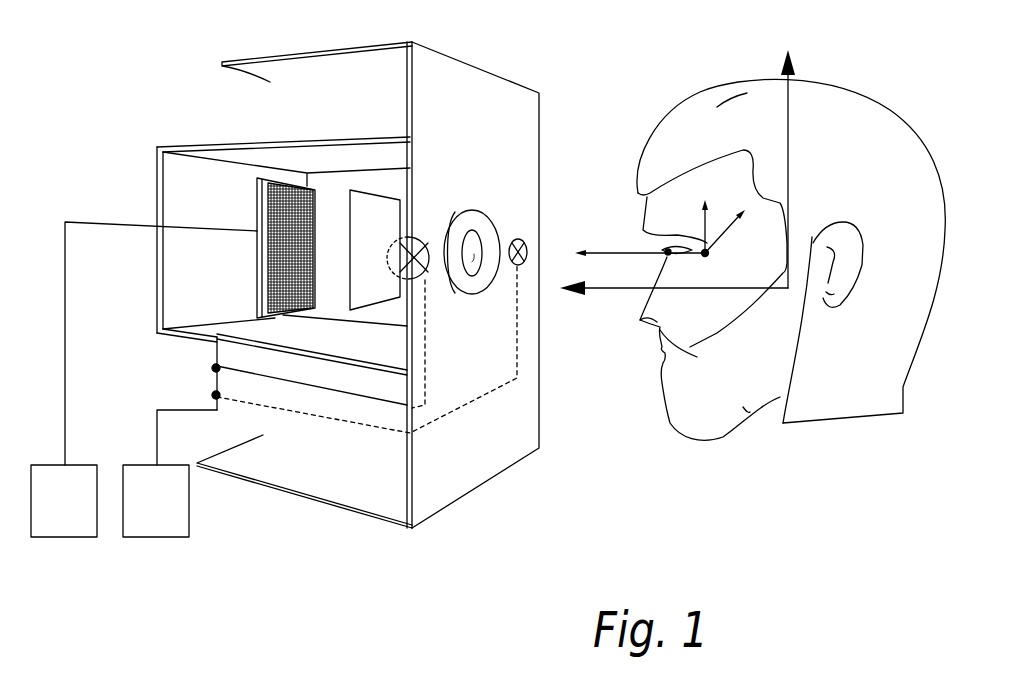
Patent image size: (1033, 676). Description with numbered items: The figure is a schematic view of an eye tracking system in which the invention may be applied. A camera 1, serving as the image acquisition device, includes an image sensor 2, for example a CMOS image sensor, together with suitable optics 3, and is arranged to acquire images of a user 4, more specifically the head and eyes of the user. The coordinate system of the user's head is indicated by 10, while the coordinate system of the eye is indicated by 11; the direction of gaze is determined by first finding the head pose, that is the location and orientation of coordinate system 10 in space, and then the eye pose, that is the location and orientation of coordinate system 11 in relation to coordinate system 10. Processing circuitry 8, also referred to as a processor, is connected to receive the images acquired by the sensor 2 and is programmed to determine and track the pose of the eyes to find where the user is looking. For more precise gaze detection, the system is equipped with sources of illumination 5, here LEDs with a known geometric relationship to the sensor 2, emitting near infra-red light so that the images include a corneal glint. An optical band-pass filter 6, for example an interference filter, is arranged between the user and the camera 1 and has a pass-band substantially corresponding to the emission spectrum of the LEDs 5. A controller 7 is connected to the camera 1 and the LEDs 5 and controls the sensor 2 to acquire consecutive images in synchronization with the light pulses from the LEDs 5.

The camera 1 is at (277, 122).
The image sensor 2 is at (273, 180).
The optics 3 is at (477, 247).
The user 4 is at (612, 186).
The sources of illumination 5 is at (520, 242).
The optical band-pass filter 6 is at (373, 210).
The controller 7 is at (160, 540).
The processing circuitry 8 is at (68, 540).
The coordinate system of the user's head 10 is at (790, 152).
The coordinate system of the eye 11 is at (703, 217).